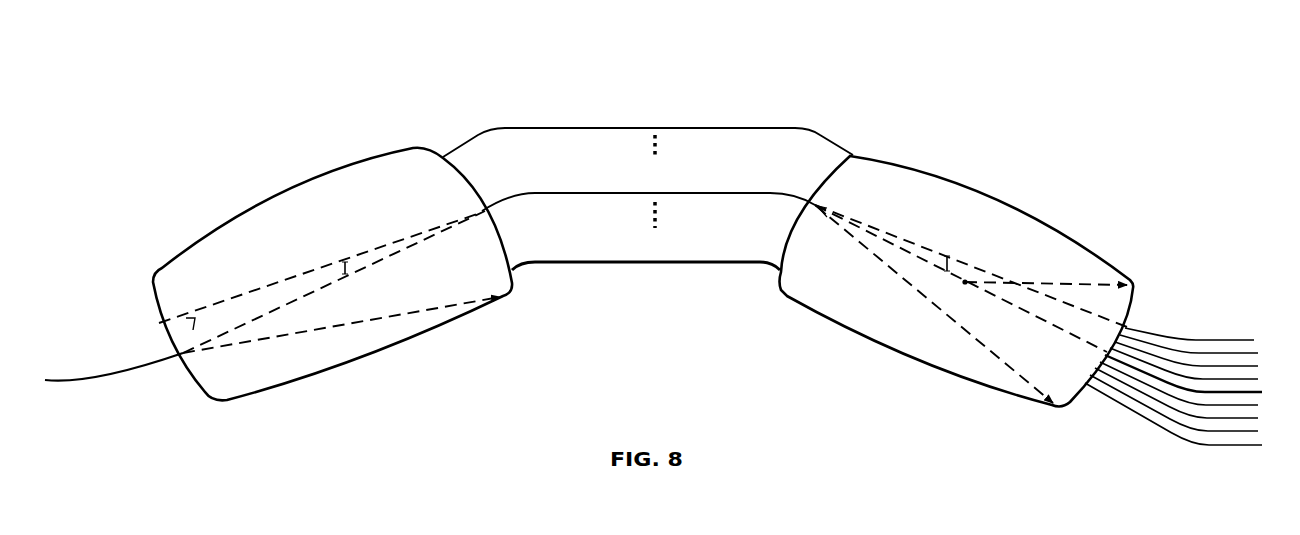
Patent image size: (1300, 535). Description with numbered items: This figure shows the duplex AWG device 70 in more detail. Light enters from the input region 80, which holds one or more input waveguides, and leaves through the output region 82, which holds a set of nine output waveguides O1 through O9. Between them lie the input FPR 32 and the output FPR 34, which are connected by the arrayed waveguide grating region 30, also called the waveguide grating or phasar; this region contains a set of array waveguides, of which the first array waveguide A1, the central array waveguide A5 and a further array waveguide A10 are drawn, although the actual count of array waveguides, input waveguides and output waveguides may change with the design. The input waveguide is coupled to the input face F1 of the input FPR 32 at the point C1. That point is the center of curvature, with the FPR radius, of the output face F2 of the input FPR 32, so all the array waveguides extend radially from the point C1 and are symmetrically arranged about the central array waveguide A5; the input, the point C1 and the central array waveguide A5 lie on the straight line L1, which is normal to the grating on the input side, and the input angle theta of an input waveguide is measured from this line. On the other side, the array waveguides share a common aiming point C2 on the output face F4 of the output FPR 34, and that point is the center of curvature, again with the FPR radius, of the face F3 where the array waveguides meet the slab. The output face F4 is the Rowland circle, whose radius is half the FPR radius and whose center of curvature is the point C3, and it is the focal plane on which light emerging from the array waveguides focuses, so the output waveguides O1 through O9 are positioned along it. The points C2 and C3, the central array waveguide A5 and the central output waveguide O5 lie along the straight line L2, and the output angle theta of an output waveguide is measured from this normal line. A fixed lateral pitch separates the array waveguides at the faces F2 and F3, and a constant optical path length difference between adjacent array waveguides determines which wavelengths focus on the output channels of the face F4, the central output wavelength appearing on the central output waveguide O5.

The duplex AWG device 70 is at (1069, 125).
The arrayed waveguide grating region 30 is at (857, 120).
The input FPR 32 is at (239, 226).
The output FPR 34 is at (997, 200).
The input region 80 is at (182, 368).
The output region 82 is at (1258, 458).
The array waveguide A1 is at (646, 250).
The central array waveguide A5 is at (648, 186).
The array waveguide A10 is at (648, 124).
The input face F1 is at (205, 394).
The output face F2 is at (514, 276).
The face F3 is at (776, 271).
The output face F4 is at (1074, 409).
The point C1 is at (181, 353).
The common aiming point C2 is at (1105, 355).
The center of curvature C3 is at (953, 298).
The straight line L1 is at (197, 333).
The straight line L2 is at (1085, 324).
The output waveguide O1 is at (1201, 340).
The central output waveguide O5 is at (1196, 383).
The output waveguide O9 is at (1186, 425).